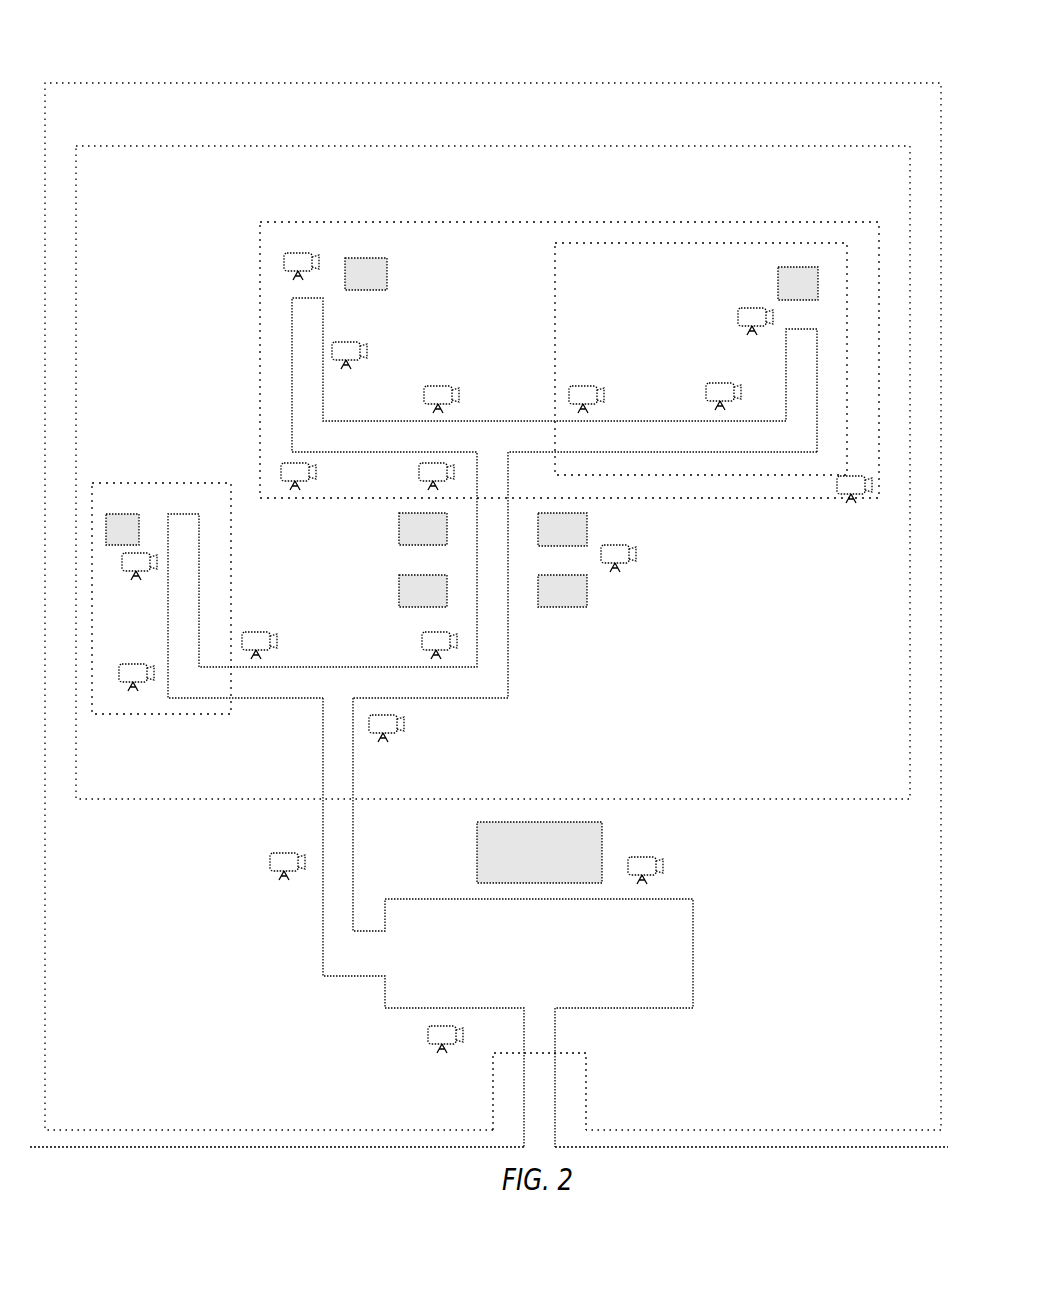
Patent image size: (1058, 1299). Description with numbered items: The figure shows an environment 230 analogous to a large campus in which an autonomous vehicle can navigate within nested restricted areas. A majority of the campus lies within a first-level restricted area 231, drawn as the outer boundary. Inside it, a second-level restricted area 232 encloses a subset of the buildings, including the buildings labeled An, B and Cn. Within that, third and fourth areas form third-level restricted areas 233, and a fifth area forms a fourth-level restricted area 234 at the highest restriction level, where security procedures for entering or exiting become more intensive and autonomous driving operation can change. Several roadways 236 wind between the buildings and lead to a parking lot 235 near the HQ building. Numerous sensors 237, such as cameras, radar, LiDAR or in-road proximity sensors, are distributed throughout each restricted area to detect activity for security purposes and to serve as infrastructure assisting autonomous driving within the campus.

The environment 230 is at (543, 40).
The first-level restricted area 231 is at (650, 1130).
The second-level restricted area 232 is at (758, 802).
The third-level restricted area 233 is at (260, 317).
The fourth-level restricted area 234 is at (555, 305).
The parking lot 235 is at (693, 945).
The roadways 236 is at (492, 680).
The sensors 237 is at (297, 253).